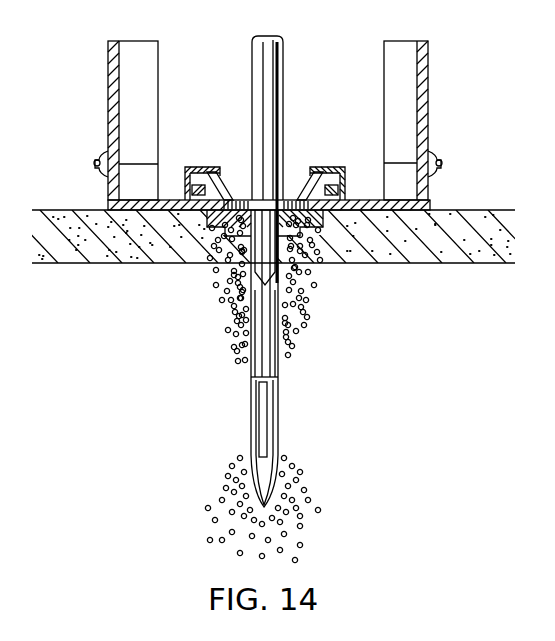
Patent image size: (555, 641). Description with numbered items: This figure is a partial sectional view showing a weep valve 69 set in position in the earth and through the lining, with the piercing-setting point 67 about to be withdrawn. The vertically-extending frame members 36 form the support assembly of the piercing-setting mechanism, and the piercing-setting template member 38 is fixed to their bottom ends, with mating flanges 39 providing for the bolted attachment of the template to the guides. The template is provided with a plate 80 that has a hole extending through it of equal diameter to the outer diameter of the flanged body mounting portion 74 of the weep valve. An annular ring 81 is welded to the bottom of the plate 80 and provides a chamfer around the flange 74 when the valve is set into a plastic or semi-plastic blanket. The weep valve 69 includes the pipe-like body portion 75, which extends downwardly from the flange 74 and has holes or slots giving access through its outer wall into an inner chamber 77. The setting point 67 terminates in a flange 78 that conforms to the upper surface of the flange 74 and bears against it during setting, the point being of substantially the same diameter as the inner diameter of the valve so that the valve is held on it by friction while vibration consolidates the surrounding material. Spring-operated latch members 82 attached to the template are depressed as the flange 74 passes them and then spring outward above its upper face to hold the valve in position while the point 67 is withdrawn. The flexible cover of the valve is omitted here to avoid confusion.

The frame member 36 is at (108, 91).
The mating flange 39 is at (96, 163).
The spring-operated latch member 82 is at (222, 196).
The flange 78 is at (283, 205).
The piercing-setting template member 38 is at (307, 195).
The plate 80 is at (430, 208).
The annular ring 81 is at (212, 225).
The piercing-setting point 67 is at (228, 280).
The flanged body mounting portion 74 is at (313, 223).
The pipe-like body portion 75 is at (285, 352).
The inner chamber 77 is at (266, 377).
The weep valve 69 is at (279, 413).